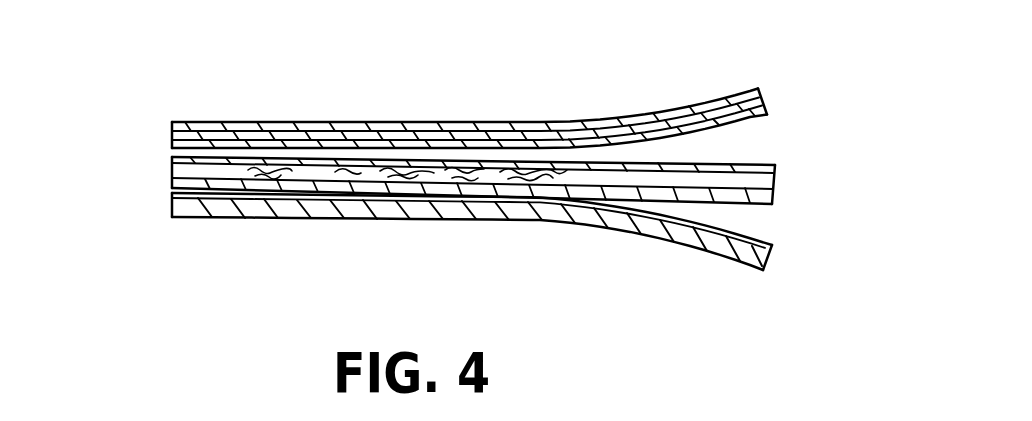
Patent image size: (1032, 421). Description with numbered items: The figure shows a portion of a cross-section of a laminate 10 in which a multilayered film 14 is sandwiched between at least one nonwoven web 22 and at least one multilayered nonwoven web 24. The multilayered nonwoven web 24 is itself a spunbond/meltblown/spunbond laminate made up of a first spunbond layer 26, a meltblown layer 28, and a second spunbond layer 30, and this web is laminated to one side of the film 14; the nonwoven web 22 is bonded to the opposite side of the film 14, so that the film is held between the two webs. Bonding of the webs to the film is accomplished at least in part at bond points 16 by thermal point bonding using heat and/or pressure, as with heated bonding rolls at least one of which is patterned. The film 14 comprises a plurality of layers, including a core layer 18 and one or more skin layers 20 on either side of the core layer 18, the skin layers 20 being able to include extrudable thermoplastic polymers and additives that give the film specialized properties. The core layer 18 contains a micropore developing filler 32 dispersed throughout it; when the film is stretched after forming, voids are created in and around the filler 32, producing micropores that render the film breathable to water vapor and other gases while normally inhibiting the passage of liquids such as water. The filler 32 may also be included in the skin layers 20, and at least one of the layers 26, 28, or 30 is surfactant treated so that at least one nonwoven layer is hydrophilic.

The laminate 10 is at (289, 105).
The multilayered film 14 is at (166, 189).
The bond points 16 is at (230, 158).
The core layer 18 is at (776, 185).
The skin layers 20 is at (745, 168).
The nonwoven web 22 is at (166, 192).
The multilayered nonwoven web 24 is at (166, 150).
The first spunbond layer 26 is at (759, 114).
The meltblown layer 28 is at (768, 98).
The second spunbond layer 30 is at (744, 90).
The micropore developing filler 32 is at (353, 163).